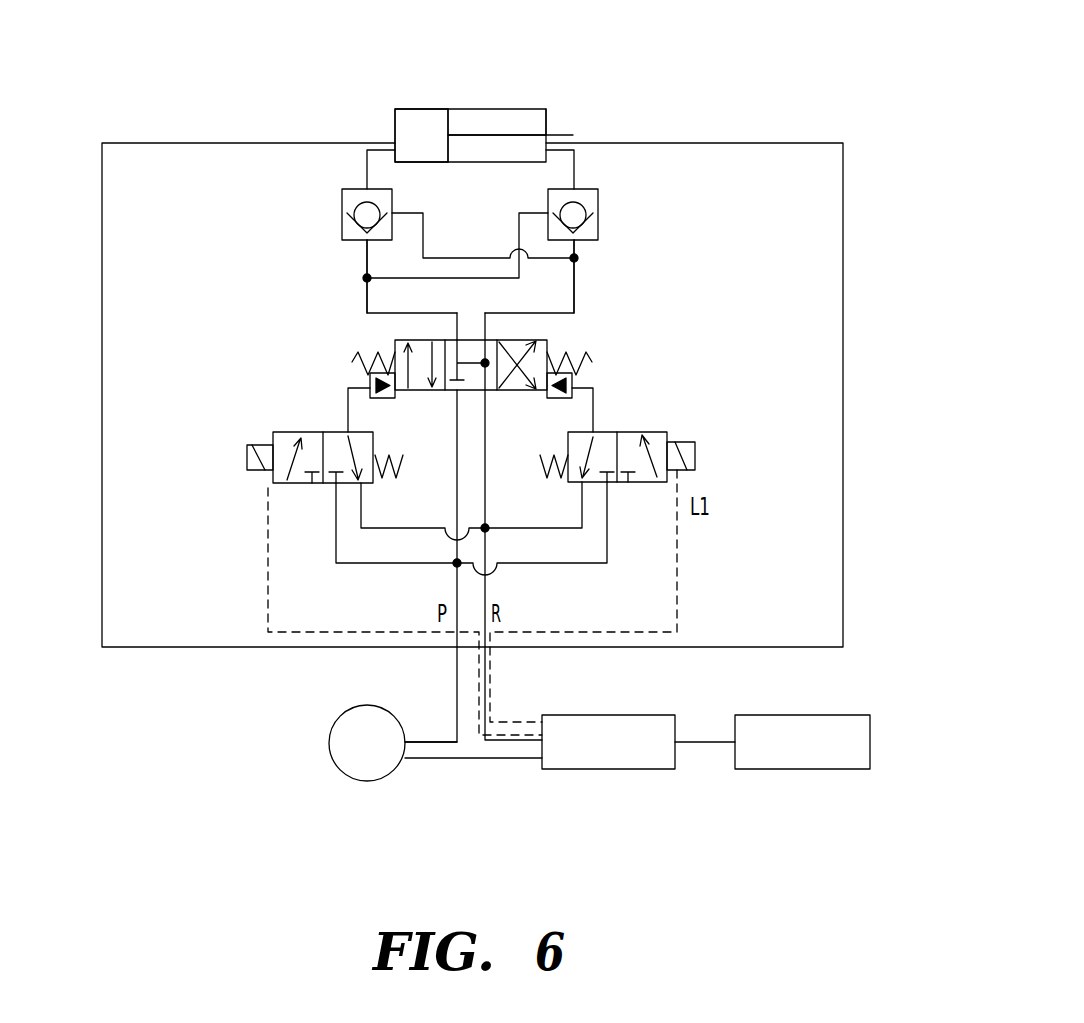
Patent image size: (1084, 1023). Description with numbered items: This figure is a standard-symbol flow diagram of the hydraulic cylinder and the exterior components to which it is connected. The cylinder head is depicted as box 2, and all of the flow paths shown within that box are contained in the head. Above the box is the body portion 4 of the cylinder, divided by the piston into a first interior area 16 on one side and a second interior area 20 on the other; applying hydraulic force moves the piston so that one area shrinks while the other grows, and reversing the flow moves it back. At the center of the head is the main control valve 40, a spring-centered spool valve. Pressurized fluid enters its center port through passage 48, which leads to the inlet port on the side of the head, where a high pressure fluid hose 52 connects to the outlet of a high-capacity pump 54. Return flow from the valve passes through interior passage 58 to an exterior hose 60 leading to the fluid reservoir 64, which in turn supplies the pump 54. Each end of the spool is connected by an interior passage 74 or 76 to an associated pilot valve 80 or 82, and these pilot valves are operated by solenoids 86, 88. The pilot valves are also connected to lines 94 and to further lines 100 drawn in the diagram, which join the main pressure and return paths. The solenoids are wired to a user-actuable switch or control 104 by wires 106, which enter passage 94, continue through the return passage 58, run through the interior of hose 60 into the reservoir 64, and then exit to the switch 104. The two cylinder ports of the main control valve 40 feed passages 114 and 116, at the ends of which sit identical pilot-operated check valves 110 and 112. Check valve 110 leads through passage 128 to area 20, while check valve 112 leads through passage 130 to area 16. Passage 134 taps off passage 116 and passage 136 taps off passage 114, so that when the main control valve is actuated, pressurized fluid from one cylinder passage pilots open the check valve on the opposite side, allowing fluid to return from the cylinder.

The cylinder head 2 is at (843, 280).
The body portion 4 is at (490, 108).
The first interior area 16 is at (523, 120).
The second interior area 20 is at (425, 128).
The main control valve 40 is at (547, 340).
The passage 48 is at (457, 418).
The high pressure fluid hose 52 is at (457, 675).
The pump 54 is at (367, 770).
The interior passage 58 is at (485, 418).
The hose 60 is at (513, 740).
The fluid reservoir 64 is at (600, 770).
The interior passage 74 is at (347, 400).
The interior passage 76 is at (597, 395).
The pilot valve 80 is at (298, 432).
The pilot valve 82 is at (640, 432).
The solenoid 86 is at (258, 445).
The solenoid 88 is at (688, 442).
The passage 94 is at (418, 528).
The drain line 100 is at (372, 563).
The switch 104 is at (807, 770).
The wires 106 is at (268, 568).
The pilot-operated check valve 110 is at (347, 197).
The pilot-operated check valve 112 is at (592, 197).
The passage 114 is at (367, 290).
The passage 116 is at (574, 281).
The passage 128 is at (367, 162).
The passage 130 is at (574, 162).
The passage 134 is at (425, 228).
The passage 136 is at (430, 278).